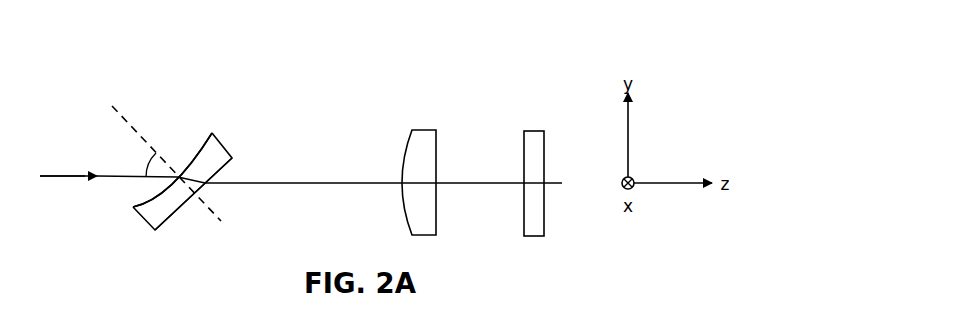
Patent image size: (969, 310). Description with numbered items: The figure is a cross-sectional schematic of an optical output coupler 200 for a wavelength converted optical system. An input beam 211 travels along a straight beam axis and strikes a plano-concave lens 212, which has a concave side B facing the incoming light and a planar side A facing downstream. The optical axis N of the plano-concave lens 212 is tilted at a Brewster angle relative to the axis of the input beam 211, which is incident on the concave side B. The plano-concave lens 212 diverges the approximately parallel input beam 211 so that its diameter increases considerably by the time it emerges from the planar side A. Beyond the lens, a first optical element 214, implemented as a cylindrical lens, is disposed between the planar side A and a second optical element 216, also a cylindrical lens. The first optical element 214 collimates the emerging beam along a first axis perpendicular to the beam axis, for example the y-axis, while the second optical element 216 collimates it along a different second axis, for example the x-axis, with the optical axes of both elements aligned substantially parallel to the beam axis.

The optical output coupler 200 is at (103, 80).
The input beam 211 is at (73, 175).
The plano-concave lens 212 is at (210, 133).
The first optical element 214 is at (425, 130).
The second optical element 216 is at (537, 131).
The optical axis N is at (132, 123).
The planar side A is at (182, 210).
The concave side B is at (136, 190).